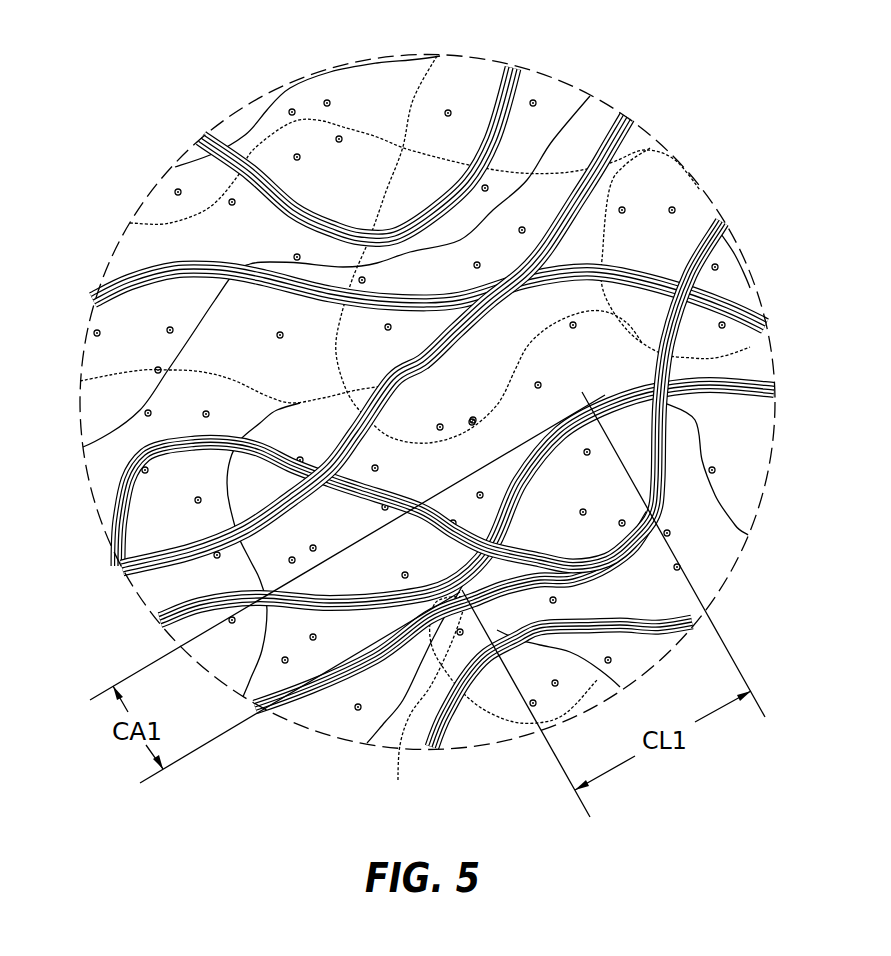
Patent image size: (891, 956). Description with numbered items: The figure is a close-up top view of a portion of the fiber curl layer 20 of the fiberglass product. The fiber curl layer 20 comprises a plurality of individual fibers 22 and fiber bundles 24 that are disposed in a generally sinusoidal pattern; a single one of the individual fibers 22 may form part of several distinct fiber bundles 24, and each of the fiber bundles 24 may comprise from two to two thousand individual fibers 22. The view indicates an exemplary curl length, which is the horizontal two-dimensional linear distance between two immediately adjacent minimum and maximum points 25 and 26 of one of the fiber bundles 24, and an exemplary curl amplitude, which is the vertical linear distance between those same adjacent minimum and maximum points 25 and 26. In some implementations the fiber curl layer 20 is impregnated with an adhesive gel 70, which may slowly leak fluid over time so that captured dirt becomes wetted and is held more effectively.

The fiber curl layer 20 is at (556, 90).
The individual fibers 22 is at (307, 120).
The fiber bundles 24 is at (172, 228).
The minimum point 25 is at (425, 701).
The maximum point 26 is at (583, 398).
The adhesive gel 70 is at (204, 413).